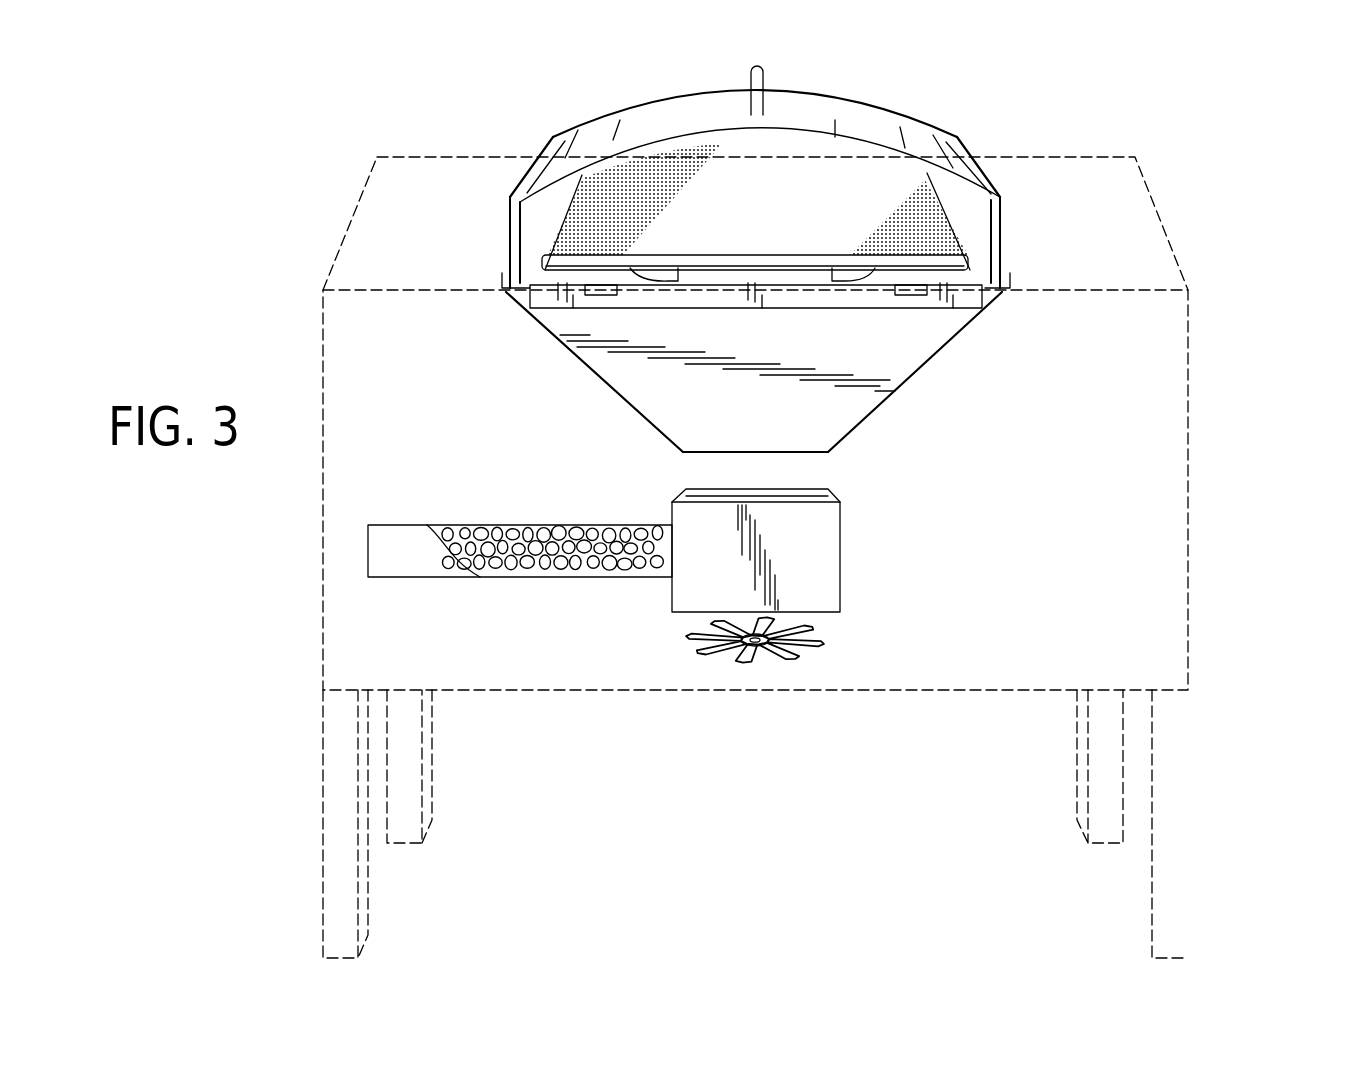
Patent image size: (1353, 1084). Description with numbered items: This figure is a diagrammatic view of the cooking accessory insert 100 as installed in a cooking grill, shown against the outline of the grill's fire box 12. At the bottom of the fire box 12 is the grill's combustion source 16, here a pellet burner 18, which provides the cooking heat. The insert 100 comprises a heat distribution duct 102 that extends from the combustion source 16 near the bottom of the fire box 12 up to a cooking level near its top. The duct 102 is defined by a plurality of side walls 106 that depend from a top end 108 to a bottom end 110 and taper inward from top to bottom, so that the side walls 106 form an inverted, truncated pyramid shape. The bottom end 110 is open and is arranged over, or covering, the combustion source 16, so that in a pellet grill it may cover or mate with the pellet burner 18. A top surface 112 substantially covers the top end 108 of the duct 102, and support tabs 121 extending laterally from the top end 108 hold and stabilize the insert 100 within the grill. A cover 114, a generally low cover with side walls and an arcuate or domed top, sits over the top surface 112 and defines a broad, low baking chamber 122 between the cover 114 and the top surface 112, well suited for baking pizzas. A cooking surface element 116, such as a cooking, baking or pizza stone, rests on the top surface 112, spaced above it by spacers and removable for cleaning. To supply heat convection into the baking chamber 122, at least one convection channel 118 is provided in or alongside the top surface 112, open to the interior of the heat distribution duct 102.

The fire box 12 is at (1190, 333).
The combustion source 16 is at (680, 576).
The pellet burner 18 is at (842, 550).
The cooking accessory insert 100 is at (758, 227).
The heat distribution duct 102 is at (751, 379).
The side walls 106 is at (608, 385).
The top end 108 is at (1002, 302).
The bottom end 110 is at (808, 452).
The top surface 112 is at (978, 250).
The cover 114 is at (553, 137).
The cooking surface element 116 is at (953, 213).
The convection channel 118 is at (850, 272).
The support tabs 121 is at (598, 295).
The baking chamber 122 is at (605, 226).